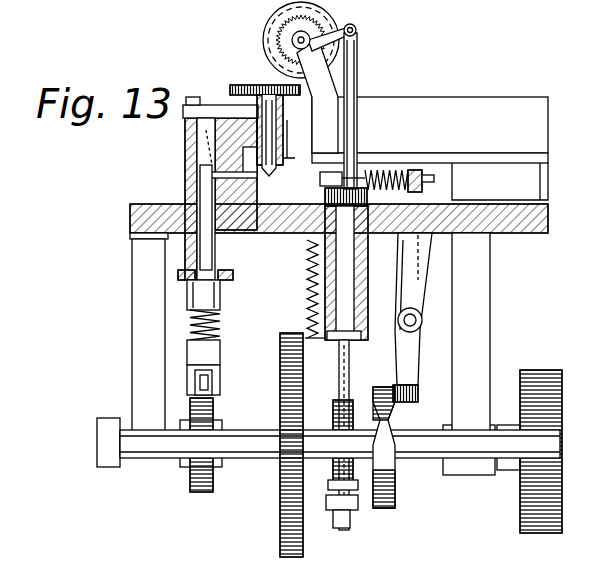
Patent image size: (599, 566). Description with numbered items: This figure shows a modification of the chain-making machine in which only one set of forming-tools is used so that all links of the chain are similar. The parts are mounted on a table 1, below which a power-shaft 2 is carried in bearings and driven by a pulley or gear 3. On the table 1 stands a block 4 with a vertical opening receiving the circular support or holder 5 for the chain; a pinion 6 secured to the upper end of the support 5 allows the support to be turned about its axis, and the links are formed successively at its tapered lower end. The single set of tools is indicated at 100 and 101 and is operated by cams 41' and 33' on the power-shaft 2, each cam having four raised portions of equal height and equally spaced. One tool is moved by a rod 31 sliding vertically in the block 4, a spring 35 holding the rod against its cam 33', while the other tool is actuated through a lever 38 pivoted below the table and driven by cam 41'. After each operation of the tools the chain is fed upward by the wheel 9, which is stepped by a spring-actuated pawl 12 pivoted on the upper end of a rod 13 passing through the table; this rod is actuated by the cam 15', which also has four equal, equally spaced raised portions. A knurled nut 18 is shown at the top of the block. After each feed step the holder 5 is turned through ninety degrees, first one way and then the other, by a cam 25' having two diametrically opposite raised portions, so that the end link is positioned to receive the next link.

The table 1 is at (148, 205).
The power-shaft 2 is at (425, 462).
The pulley or gear 3 is at (210, 157).
The block 4 is at (230, 125).
The support 5 is at (278, 166).
The pinion 6 is at (262, 92).
The wheel 9 is at (275, 25).
The spring-actuated pawl 12 is at (336, 38).
The rod 13 is at (358, 70).
The knurled nut 18 is at (235, 85).
The forming-tool 100 is at (380, 172).
The forming-tool 101 is at (245, 233).
The rod 31 is at (222, 297).
The spring 35 is at (222, 328).
The cam 25' is at (271, 445).
The cam 15' is at (340, 359).
The lever 38 is at (410, 352).
The cam 33' is at (201, 436).
The cam 41' is at (403, 449).